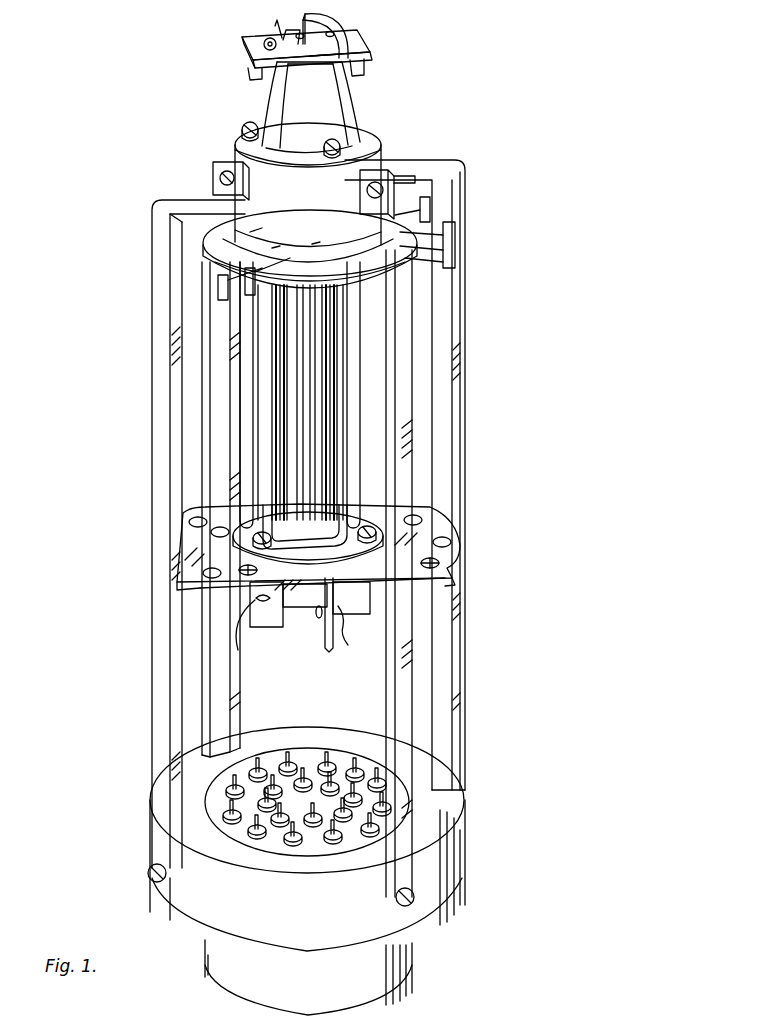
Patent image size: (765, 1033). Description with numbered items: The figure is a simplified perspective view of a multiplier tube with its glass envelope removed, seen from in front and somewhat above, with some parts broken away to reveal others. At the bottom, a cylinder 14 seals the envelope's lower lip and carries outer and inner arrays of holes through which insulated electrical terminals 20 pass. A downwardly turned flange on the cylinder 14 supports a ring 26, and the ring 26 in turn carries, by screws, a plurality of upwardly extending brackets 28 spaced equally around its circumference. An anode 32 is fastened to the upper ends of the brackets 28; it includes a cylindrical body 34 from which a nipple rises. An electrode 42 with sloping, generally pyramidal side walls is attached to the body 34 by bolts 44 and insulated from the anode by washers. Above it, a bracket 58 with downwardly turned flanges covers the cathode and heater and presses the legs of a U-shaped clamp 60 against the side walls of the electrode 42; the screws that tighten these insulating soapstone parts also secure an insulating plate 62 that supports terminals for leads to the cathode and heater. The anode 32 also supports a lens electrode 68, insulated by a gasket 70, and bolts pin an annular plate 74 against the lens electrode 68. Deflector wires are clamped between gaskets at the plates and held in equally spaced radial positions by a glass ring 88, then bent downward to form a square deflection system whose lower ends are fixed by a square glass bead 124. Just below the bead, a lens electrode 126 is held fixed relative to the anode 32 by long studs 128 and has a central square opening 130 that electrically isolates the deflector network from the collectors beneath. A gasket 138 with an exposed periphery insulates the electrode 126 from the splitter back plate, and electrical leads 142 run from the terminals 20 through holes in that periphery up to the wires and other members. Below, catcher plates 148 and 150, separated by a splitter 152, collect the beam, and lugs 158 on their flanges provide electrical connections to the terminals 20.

The cylinder 14 is at (270, 850).
The electrical terminals 20 is at (325, 760).
The ring 26 is at (460, 845).
The brackets 28 is at (210, 370).
The anode 32 is at (384, 150).
The cylindrical body 34 is at (300, 176).
The electrode 42 is at (362, 92).
The bolts 44 is at (250, 122).
The bracket 58 is at (246, 51).
The U-shaped clamp 60 is at (372, 68).
The insulating plate 62 is at (262, 38).
The lens electrode 68 is at (314, 246).
The gasket 70 is at (250, 233).
The annular plate 74 is at (272, 249).
The glass ring 88 is at (265, 250).
The square glass bead 124 is at (244, 532).
The lens electrode 126 is at (400, 545).
The long studs 128 is at (245, 437).
The square opening 130 is at (306, 540).
The gasket 138 is at (462, 548).
The electrical leads 142 is at (236, 274).
The catcher plate 148 is at (300, 608).
The catcher plate 150 is at (340, 622).
The splitter 152 is at (333, 645).
The lugs 158 is at (240, 645).